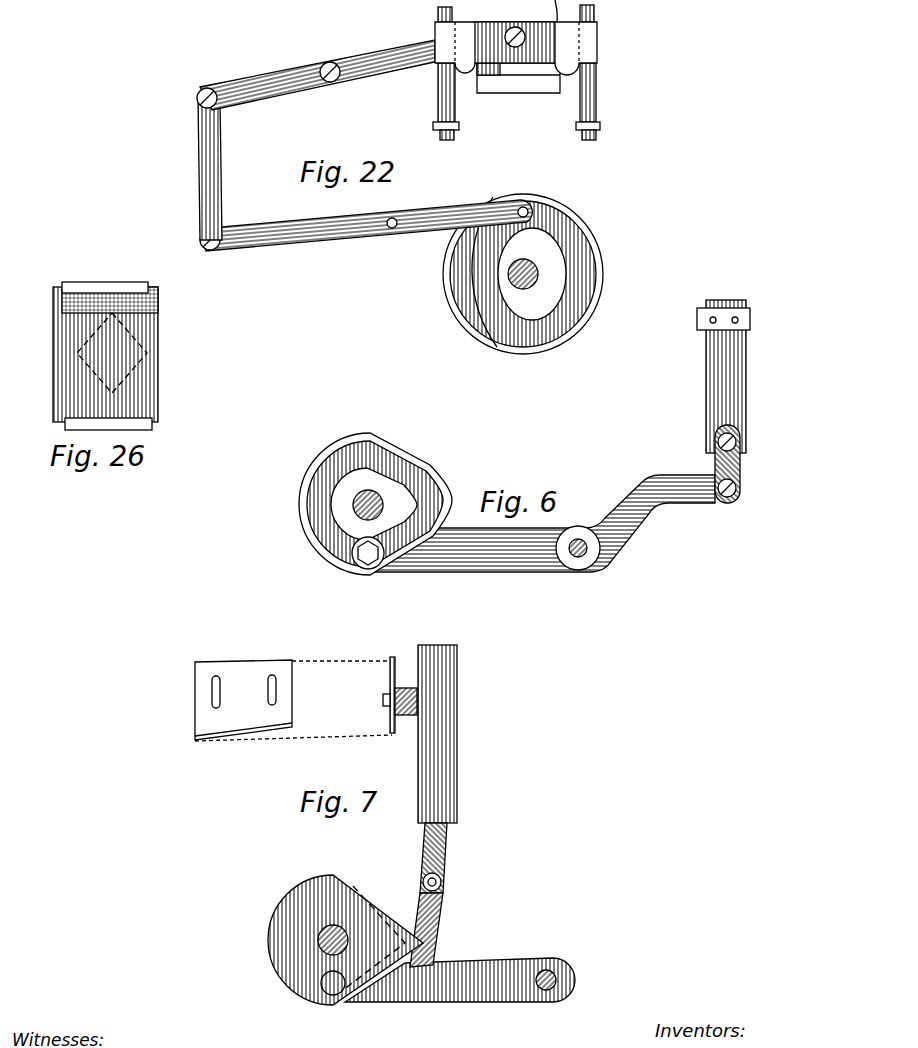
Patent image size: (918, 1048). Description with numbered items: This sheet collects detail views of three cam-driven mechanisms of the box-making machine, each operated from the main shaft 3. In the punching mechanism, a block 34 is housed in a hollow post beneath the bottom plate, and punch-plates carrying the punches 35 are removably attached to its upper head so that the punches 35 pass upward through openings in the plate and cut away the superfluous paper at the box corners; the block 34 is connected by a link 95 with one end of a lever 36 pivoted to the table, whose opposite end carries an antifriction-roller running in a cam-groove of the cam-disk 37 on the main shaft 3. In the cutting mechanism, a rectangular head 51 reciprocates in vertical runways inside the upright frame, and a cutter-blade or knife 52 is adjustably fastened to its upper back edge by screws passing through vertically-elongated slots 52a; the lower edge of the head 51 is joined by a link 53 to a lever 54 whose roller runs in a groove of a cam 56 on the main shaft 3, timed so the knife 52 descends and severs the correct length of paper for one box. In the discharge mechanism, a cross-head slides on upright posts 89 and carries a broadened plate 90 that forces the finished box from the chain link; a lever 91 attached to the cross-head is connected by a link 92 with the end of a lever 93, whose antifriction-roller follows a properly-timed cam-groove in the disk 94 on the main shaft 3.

In FIG. 22, the shaft 3 is at (538, 275).
In FIG. 6, the shaft 3 is at (355, 505).
In FIG. 7, the shaft 3 is at (320, 940).
In FIG. 26, the block 34 is at (158, 348).
In FIG. 6, the block 34 is at (712, 370).
In FIG. 26, the punches 35 is at (105, 282).
In FIG. 6, the punches 35 is at (725, 300).
In FIG. 6, the lever 36 is at (545, 523).
In FIG. 6, the cam-disk 37 is at (425, 468).
In FIG. 7, the rectangular head 51 is at (457, 748).
In FIG. 7, the cutter-blade or knife 52 is at (243, 665).
In FIG. 7, the slots 52a is at (212, 691).
In FIG. 7, the link 53 is at (440, 905).
In FIG. 7, the lever 54 is at (520, 960).
In FIG. 7, the cam 56 is at (345, 930).
In FIG. 22, the upright posts 89 is at (437, 100).
In FIG. 22, the broadened plate 90 is at (535, 93).
In FIG. 22, the lever 91 is at (316, 67).
In FIG. 22, the link 92 is at (193, 169).
In FIG. 22, the lever 93 is at (366, 233).
In FIG. 22, the disk 94 is at (452, 280).
In FIG. 6, the link 95 is at (740, 467).